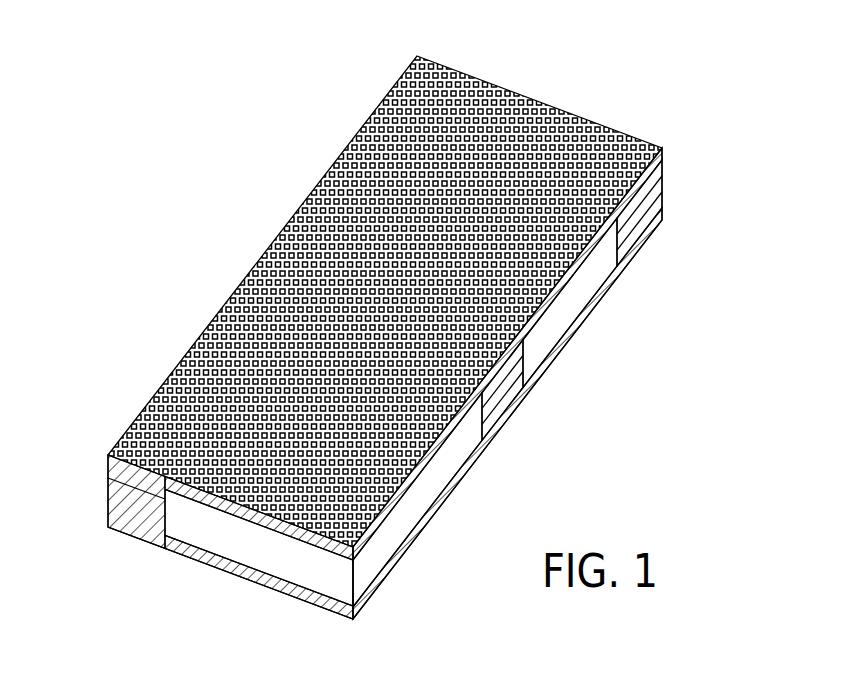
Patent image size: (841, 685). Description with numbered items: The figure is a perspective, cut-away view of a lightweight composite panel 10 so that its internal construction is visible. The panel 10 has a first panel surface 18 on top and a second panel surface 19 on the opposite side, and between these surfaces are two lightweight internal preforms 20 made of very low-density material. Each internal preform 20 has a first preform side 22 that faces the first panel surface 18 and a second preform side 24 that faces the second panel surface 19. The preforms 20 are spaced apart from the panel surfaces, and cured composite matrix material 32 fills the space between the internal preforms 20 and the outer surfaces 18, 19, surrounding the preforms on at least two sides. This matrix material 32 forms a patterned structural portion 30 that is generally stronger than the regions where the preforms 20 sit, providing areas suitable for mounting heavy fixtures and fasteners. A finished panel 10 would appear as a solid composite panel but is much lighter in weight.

The composite panel 10 is at (667, 40).
The first panel surface 18 is at (647, 143).
The second panel surface 19 is at (657, 224).
The internal preform 20 is at (460, 453).
The first preform side 22 is at (108, 473).
The second preform side 24 is at (155, 538).
The patterned structural portion 30 is at (117, 510).
The cured composite matrix material 32 is at (653, 200).